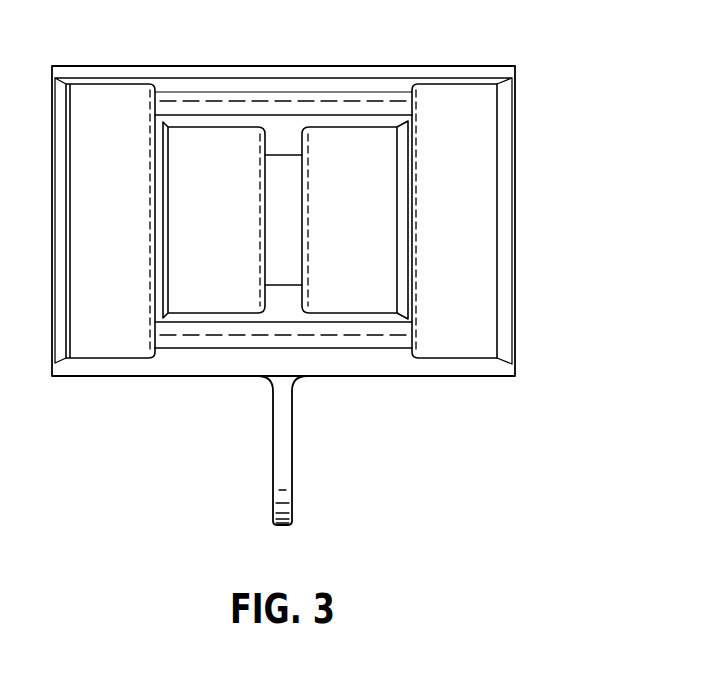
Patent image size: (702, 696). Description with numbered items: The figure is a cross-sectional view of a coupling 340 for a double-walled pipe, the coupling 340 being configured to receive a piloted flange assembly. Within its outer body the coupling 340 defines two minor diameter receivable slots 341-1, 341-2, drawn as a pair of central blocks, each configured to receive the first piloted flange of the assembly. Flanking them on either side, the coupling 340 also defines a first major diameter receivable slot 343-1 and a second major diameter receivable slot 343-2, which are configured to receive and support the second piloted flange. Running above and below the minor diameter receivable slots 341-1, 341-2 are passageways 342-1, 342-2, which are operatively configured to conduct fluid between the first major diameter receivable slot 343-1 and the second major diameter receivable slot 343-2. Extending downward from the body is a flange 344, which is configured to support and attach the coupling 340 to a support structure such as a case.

The coupling 340 is at (82, 66).
The minor diameter receivable slot 341-1 is at (365, 302).
The minor diameter receivable slot 341-2 is at (193, 295).
The passageway 342-1 is at (233, 101).
The passageway 342-2 is at (328, 342).
The first major diameter receivable slot 343-1 is at (477, 101).
The second major diameter receivable slot 343-2 is at (88, 347).
The flange 344 is at (292, 503).